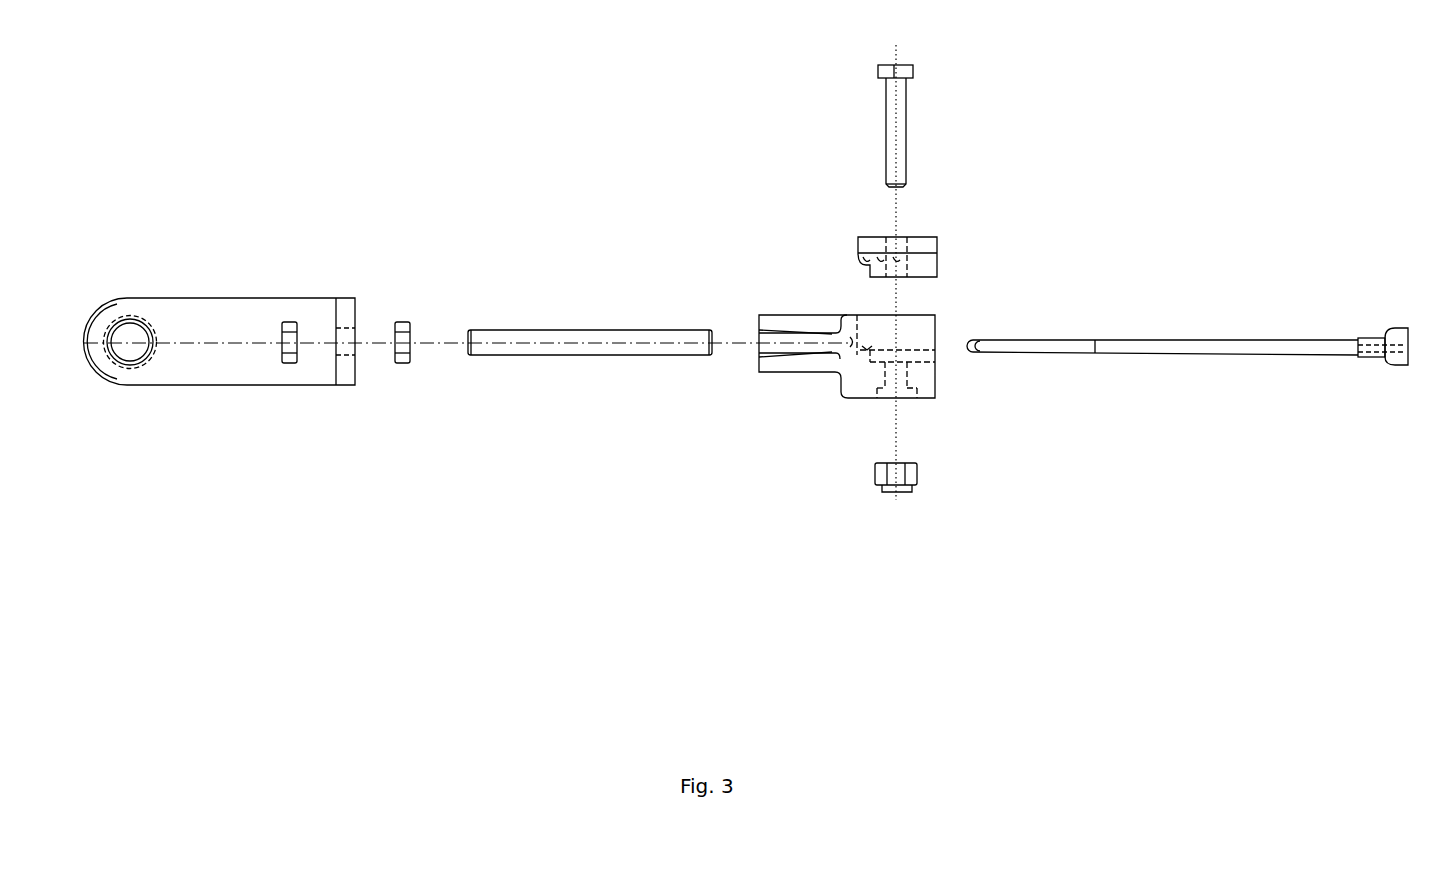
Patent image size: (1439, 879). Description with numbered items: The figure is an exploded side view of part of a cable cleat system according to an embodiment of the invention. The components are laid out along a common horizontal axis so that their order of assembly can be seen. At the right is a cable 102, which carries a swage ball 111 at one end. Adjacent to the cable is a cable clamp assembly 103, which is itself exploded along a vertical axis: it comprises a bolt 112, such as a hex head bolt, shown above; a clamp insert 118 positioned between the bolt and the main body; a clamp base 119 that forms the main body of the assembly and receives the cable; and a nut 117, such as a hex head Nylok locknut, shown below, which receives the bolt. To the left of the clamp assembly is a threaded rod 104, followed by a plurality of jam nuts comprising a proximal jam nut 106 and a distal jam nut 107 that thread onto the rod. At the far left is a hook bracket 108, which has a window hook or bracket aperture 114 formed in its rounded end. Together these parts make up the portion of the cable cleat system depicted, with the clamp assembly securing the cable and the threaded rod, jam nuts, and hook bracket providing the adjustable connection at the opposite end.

The cable 102 is at (1218, 337).
The cable clamp assembly 103 is at (847, 415).
The threaded rod 104 is at (583, 329).
The proximal jam nut 106 is at (288, 366).
The distal jam nut 107 is at (403, 366).
The hook bracket 108 is at (206, 287).
The swage ball 111 is at (1400, 364).
The bolt 112 is at (909, 147).
The window hook or bracket aperture 114 is at (130, 335).
The nut 117 is at (919, 475).
The clamp insert 118 is at (857, 237).
The clamp base 119 is at (795, 313).